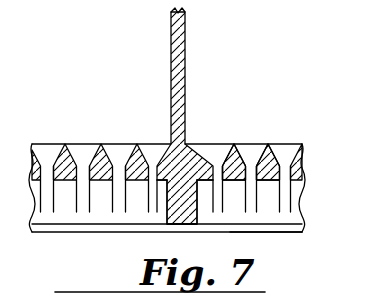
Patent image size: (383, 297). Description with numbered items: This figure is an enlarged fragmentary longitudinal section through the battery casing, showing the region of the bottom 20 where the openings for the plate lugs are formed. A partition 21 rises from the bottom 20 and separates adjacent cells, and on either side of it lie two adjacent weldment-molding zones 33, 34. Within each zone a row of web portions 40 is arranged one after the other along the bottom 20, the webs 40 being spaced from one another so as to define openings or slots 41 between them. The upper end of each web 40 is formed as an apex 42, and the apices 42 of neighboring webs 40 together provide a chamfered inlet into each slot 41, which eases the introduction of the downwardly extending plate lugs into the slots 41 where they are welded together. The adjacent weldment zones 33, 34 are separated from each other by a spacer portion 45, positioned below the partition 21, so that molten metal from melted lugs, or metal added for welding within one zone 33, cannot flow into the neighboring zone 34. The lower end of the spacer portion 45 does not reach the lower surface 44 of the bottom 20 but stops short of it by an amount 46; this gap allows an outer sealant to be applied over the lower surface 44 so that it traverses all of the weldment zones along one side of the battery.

The bottom 20 is at (303, 145).
The partition 21 is at (176, 62).
The weldment-molding zone 33 is at (130, 205).
The weldment-molding zone 34 is at (275, 215).
The web portion 40 is at (277, 147).
The opening or slot 41 is at (250, 147).
The apex 42 is at (260, 147).
The lower surface 44 is at (299, 234).
The spacer portion 45 is at (177, 200).
The spacing amount 46 is at (278, 226).